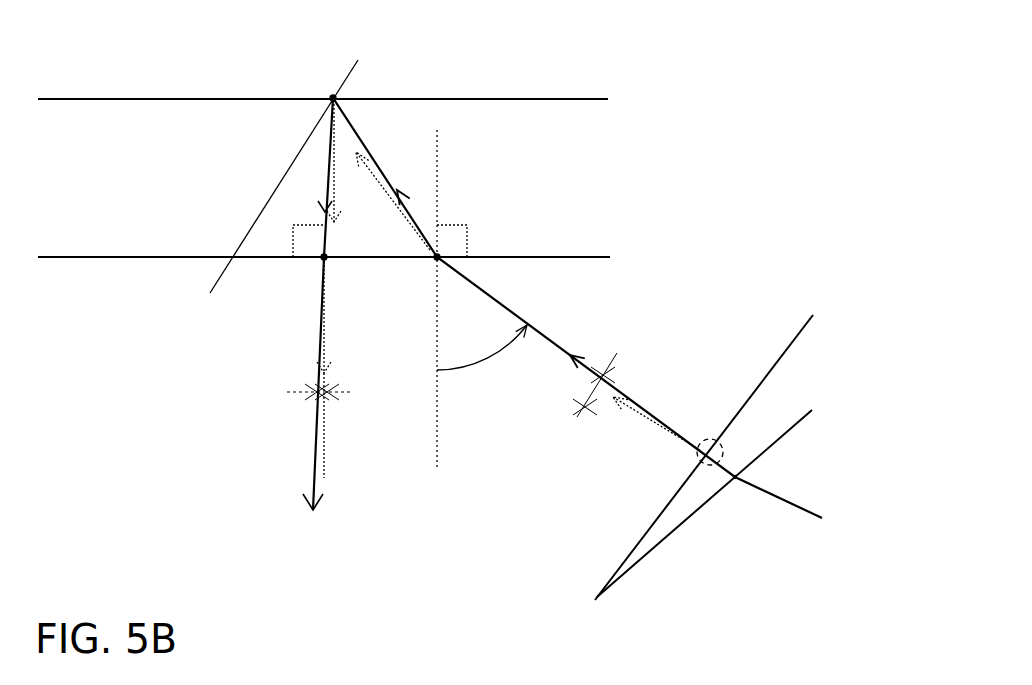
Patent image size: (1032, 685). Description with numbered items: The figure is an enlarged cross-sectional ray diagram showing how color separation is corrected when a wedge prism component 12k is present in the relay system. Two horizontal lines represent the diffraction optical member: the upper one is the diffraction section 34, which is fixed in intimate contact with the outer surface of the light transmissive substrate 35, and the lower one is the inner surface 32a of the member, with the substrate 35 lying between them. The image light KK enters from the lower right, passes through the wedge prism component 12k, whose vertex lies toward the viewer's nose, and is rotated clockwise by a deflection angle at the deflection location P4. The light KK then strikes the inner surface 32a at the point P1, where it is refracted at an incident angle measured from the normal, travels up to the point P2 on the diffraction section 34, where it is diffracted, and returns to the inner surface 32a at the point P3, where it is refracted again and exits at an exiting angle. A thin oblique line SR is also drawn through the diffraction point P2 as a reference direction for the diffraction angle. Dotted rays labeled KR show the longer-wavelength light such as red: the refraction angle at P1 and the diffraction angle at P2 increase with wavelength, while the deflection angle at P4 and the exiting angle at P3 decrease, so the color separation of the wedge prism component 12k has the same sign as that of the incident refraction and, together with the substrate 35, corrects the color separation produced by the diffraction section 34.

The diffraction section 34 is at (613, 98).
The inner surface 32a is at (103, 260).
The light transmissive substrate 35 is at (578, 176).
The reference line through P2 SR is at (245, 238).
The image light KK is at (618, 388).
The longer wavelength light KR is at (338, 157).
The wedge prism component 12k is at (788, 348).
The point on inner surface P1 is at (442, 261).
The point on diffraction section P2 is at (333, 98).
The point on inner surface P3 is at (318, 262).
The deflection location P4 is at (737, 480).